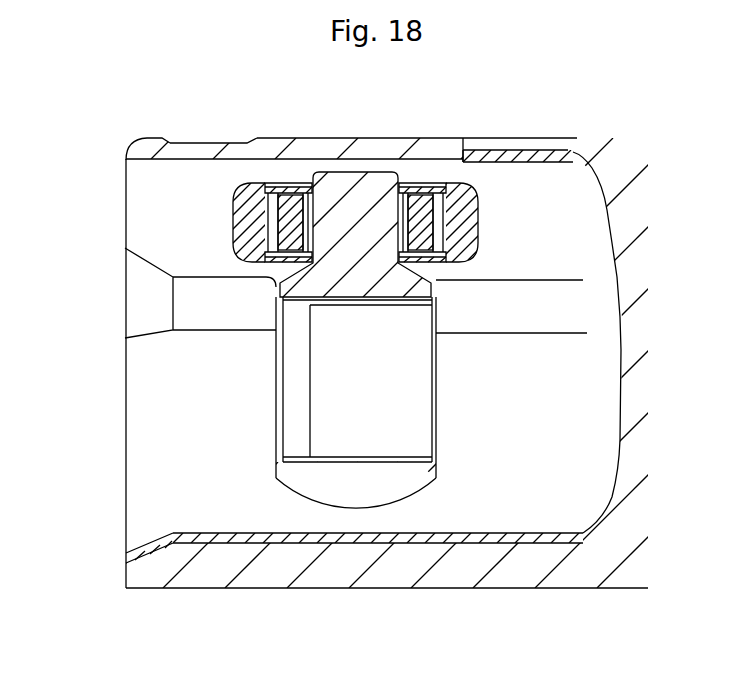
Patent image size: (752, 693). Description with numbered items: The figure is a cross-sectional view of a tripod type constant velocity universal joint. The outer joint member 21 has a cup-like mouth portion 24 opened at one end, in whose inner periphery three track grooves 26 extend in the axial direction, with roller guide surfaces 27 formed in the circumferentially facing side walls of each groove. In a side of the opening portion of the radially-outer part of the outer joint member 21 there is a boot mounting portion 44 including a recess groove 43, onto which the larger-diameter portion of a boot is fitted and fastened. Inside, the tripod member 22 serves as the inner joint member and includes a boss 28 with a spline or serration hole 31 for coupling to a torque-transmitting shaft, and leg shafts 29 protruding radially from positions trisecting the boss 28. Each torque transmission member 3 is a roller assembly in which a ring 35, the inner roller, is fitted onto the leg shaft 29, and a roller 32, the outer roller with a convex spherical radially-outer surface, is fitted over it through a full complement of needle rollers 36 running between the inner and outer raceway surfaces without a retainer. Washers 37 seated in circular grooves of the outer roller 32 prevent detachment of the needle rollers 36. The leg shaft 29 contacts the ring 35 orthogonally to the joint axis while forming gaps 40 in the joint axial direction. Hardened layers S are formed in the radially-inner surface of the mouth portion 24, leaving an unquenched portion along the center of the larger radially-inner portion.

The bearing 3 is at (468, 185).
The outer joint member 21 is at (530, 136).
The tripod member 22 is at (398, 503).
The mouth portion 24 is at (320, 591).
The track groove 26 is at (213, 177).
The roller guide surface 27 is at (152, 182).
The boss 28 is at (275, 486).
The leg shaft 29 is at (343, 193).
The spline hole or serration hole 31 is at (380, 457).
The roller 32 is at (468, 205).
The ring 35 is at (420, 207).
The needle rollers 36 is at (285, 222).
The washer 37 is at (277, 184).
The gap 40 is at (307, 207).
The recess groove 43 is at (180, 140).
The boot mounting portion 44 is at (227, 140).
The hardened layer S is at (543, 161).